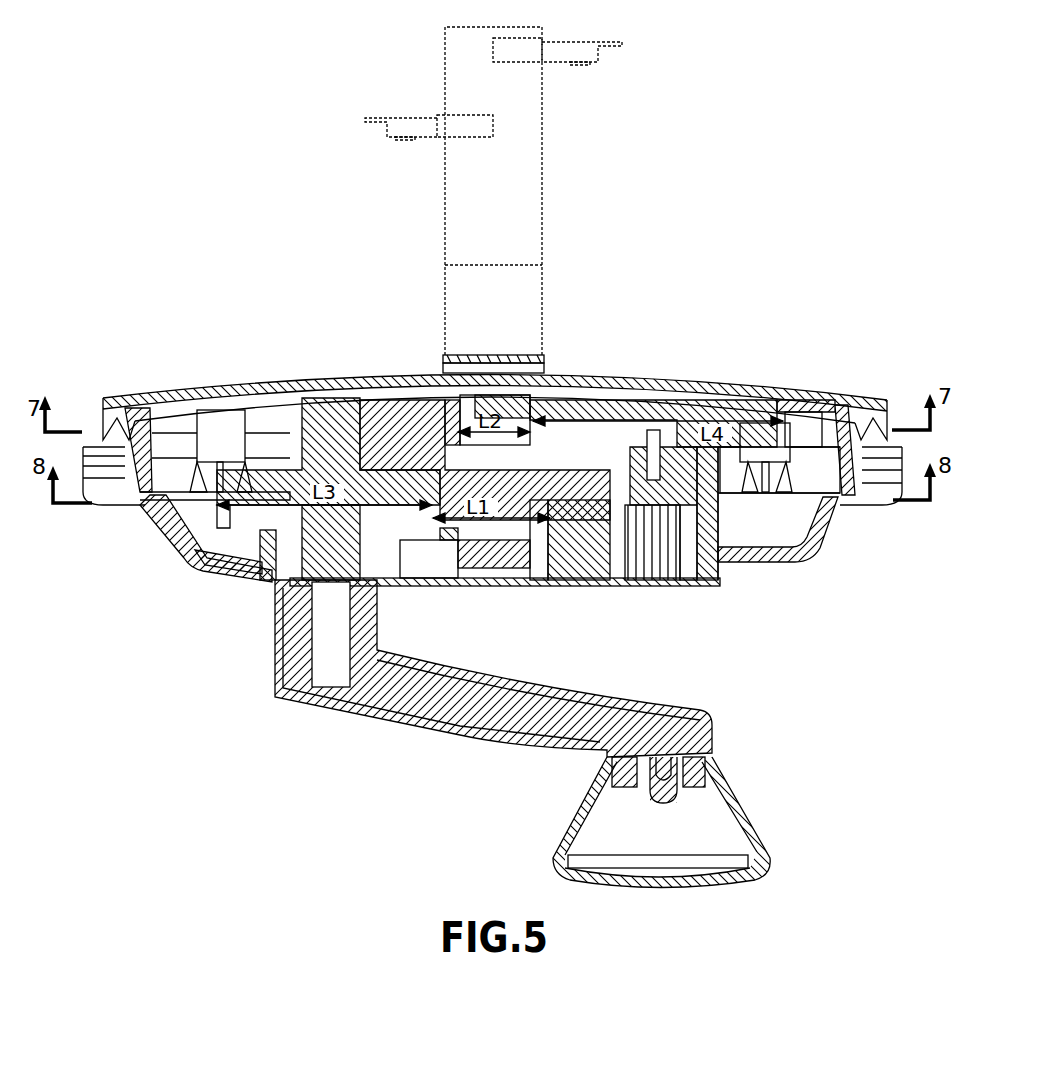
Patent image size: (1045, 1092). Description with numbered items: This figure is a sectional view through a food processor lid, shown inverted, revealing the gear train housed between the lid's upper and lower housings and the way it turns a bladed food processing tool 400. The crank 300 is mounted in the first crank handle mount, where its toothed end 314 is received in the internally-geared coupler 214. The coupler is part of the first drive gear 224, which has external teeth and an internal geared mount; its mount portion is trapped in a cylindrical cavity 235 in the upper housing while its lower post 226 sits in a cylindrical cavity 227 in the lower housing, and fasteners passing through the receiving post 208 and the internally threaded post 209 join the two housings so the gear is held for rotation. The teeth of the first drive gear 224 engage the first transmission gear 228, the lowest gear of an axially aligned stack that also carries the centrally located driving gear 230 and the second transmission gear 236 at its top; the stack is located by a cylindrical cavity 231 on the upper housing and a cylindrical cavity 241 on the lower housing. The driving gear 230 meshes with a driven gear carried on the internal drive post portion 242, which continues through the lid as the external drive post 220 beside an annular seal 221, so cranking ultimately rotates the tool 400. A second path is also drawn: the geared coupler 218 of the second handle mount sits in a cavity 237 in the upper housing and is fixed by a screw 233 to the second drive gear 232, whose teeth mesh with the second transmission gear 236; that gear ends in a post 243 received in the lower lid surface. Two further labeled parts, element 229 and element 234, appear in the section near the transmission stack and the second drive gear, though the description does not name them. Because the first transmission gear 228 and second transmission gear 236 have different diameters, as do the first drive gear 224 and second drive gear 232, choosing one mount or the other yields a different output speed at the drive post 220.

The food processing tool 400 is at (528, 172).
The drive post 220 is at (528, 308).
The annular seal 221 is at (543, 357).
The post 243 is at (530, 380).
The lower post 226 is at (300, 412).
The geared coupler 218 is at (677, 565).
The receiving post 208 is at (213, 425).
The internally threaded post 209 is at (208, 475).
The cylindrical cavity 227 is at (262, 418).
The driving gear 230 is at (427, 467).
The second transmission gear 236 is at (435, 420).
The cylindrical cavity 241 is at (445, 406).
The internal drive post portion 242 is at (613, 402).
The screw 233 is at (640, 428).
The second drive gear 232 is at (747, 413).
The first transmission gear 228 is at (535, 525).
The plate 229 is at (482, 553).
The cylindrical cavity 231 is at (448, 550).
The cavity 237 is at (600, 553).
The column 234 is at (693, 510).
The first drive gear 224 is at (247, 543).
The cylindrical cavity 235 is at (242, 513).
The internally-geared coupler 214 is at (285, 578).
The crank 300 is at (275, 650).
The toothed end 314 is at (312, 608).